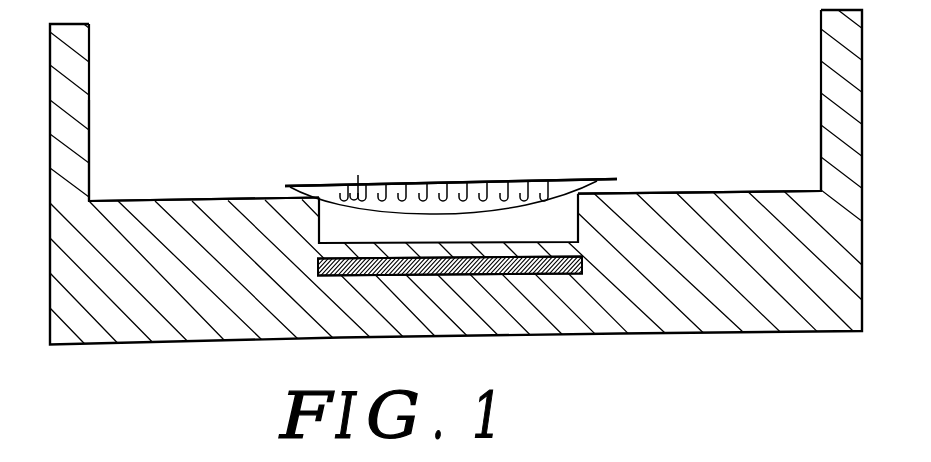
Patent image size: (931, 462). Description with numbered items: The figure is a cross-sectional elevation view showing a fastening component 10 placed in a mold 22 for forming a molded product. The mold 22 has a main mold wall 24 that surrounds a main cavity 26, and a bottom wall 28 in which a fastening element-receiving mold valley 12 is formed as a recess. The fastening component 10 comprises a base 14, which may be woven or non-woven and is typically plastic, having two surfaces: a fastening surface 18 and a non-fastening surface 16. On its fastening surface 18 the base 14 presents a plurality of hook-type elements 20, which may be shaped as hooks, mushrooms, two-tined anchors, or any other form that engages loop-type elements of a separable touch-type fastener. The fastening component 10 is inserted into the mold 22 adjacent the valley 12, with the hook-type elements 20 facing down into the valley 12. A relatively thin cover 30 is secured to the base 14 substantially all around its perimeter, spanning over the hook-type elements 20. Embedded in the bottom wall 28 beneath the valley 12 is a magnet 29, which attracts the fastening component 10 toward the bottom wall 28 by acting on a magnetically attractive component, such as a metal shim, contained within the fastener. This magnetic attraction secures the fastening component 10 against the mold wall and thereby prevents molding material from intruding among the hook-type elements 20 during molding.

The fastening component 10 is at (541, 137).
The fastening element-receiving mold valley 12 is at (345, 228).
The base 14 is at (428, 183).
The non-fastening surface 16 is at (572, 177).
The fastening surface 18 is at (512, 182).
The hook-type elements 20 is at (358, 176).
The mold 22 is at (40, 89).
The main mold wall 24 is at (89, 97).
The main cavity 26 is at (732, 100).
The bottom wall 28 is at (200, 201).
The magnet 29 is at (527, 276).
The cover 30 is at (516, 212).